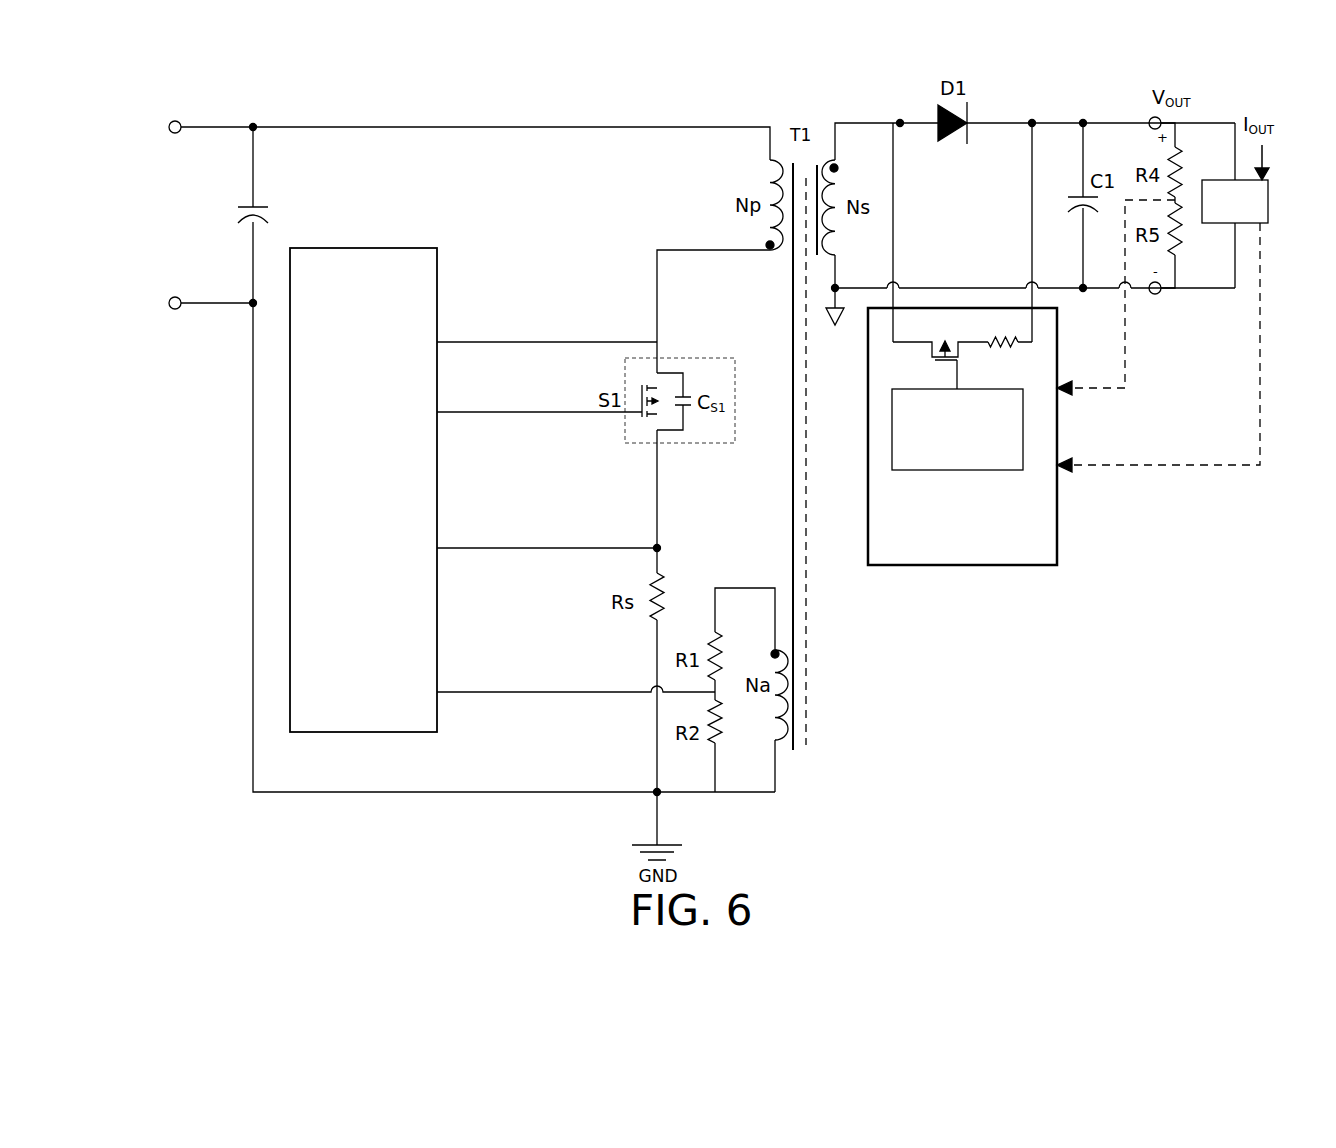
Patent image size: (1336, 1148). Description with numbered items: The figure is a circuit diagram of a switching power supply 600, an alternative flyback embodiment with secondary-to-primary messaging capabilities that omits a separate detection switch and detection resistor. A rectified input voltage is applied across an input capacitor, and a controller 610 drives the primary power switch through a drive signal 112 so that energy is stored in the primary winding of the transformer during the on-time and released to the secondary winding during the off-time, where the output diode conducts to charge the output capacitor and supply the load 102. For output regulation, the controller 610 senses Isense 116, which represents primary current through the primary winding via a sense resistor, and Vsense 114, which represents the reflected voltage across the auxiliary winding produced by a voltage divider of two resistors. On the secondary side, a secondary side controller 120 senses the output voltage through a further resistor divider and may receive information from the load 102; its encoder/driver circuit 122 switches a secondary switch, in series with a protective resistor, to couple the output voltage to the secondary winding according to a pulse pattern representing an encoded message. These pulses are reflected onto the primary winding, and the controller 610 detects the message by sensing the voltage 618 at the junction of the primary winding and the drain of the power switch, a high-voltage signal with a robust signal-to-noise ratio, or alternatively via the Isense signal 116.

The switching power supply 600 is at (240, 826).
The controller 610 is at (363, 490).
The voltage 618 is at (502, 341).
The drive signal 112 is at (546, 411).
The Isense 116 is at (482, 550).
The Vsense 114 is at (476, 690).
The secondary side controller 120 is at (962, 436).
The encoder/driver circuit 122 is at (957, 429).
The load 102 is at (1235, 205).